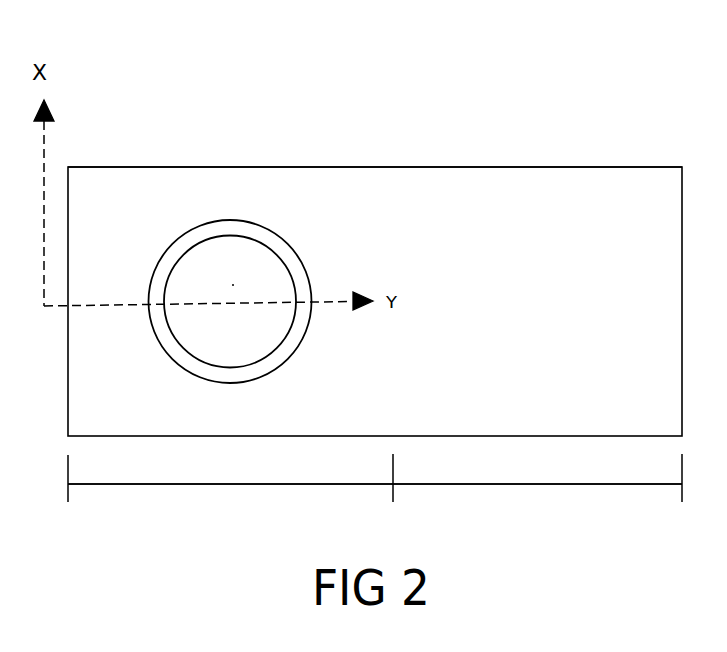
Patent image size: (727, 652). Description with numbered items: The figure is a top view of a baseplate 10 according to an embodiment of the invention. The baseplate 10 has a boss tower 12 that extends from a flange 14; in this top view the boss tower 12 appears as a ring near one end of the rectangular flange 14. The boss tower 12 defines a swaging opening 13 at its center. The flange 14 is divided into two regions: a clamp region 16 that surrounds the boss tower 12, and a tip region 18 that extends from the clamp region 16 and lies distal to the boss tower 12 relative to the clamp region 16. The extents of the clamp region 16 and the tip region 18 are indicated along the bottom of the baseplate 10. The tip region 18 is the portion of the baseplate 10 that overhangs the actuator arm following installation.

The baseplate 10 is at (508, 123).
The boss tower 12 is at (303, 258).
The swaging opening 13 is at (233, 285).
The flange 14 is at (582, 167).
The clamp region 16 is at (213, 485).
The tip region 18 is at (505, 483).